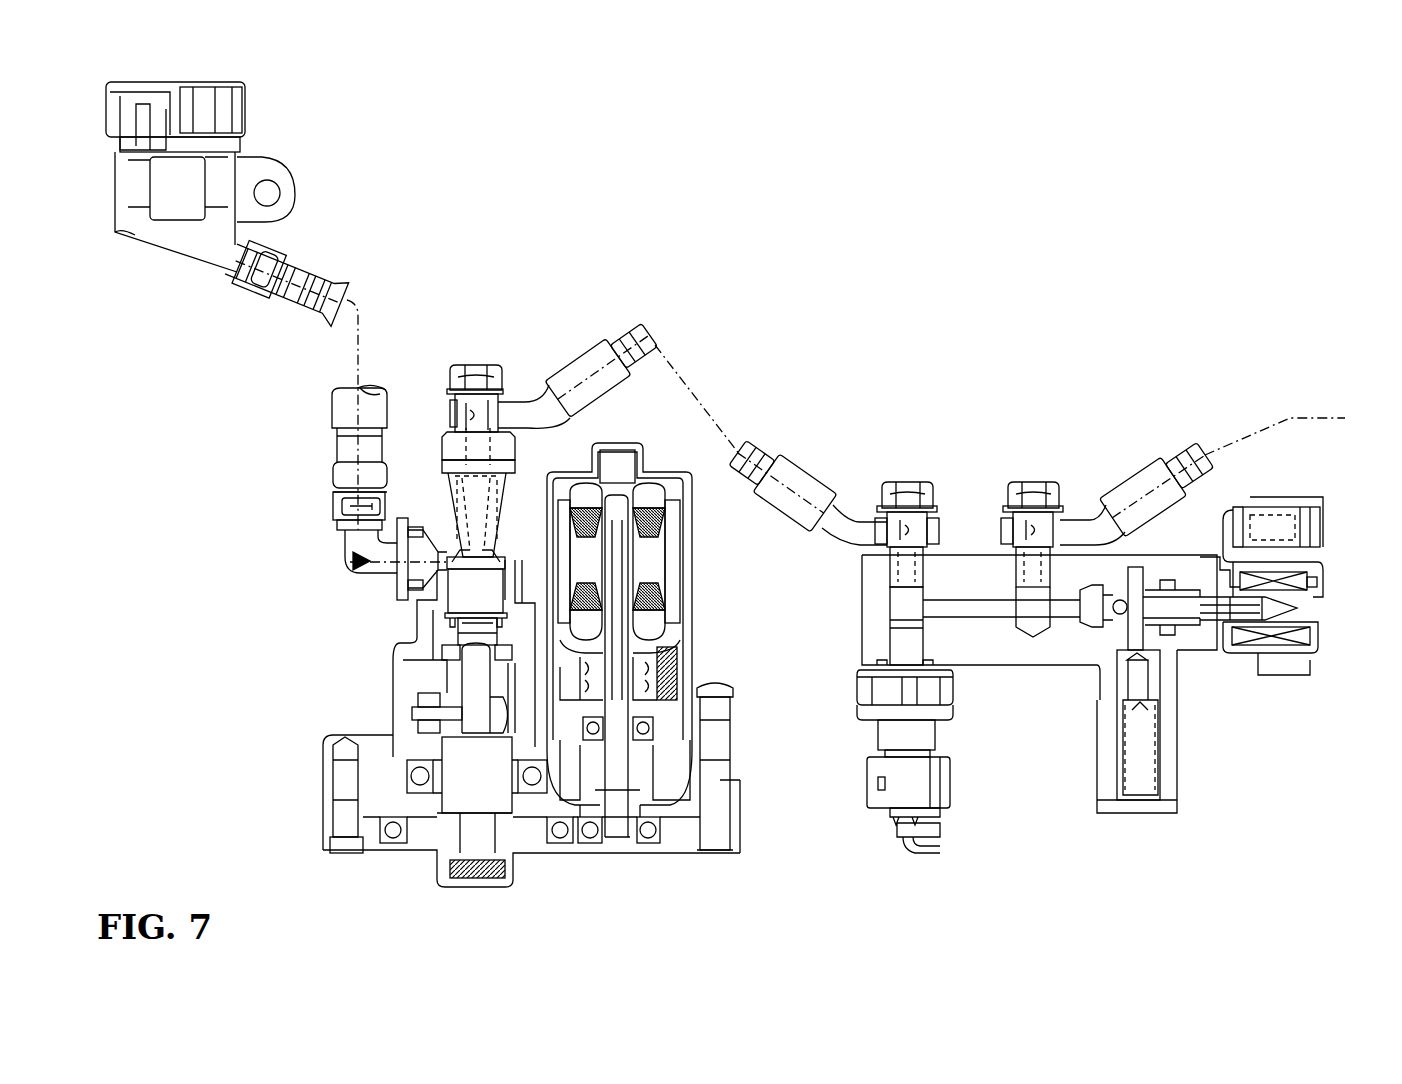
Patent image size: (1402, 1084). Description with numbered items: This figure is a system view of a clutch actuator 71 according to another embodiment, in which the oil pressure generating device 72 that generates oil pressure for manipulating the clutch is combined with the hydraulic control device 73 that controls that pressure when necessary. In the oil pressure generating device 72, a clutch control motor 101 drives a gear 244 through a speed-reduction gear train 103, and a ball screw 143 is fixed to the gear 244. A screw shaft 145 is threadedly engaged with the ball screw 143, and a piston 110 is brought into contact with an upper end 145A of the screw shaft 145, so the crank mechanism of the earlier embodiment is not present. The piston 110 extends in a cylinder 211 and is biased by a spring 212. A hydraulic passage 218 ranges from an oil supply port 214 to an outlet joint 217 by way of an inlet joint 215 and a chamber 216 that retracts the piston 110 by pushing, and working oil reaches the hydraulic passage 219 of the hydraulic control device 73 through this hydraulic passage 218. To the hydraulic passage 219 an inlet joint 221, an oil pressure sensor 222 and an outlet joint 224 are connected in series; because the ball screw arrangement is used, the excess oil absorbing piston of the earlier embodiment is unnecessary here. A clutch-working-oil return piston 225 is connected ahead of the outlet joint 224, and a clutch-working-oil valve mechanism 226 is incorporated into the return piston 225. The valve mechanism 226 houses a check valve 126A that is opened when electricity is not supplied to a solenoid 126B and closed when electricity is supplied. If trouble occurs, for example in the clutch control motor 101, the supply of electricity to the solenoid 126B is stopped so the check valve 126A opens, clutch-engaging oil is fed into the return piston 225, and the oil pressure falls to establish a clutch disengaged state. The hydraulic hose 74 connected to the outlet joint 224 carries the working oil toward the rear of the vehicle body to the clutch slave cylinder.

The clutch actuator 71 is at (837, 232).
The oil pressure generating device 72 is at (213, 489).
The hydraulic control device 73 is at (1107, 349).
The hydraulic hose 74 is at (1290, 410).
The clutch control motor 101 is at (657, 587).
The speed-reduction gear train 103 is at (590, 807).
The piston 110 is at (410, 627).
The check valve 126A is at (1118, 623).
The solenoid 126B is at (1293, 587).
The ball screw 143 is at (463, 760).
The screw shaft 145 is at (463, 720).
The upper end of the screw shaft 145A is at (470, 677).
The cylinder 211 is at (500, 597).
The spring 212 is at (505, 492).
The oil supply port 214 is at (133, 190).
The inlet joint 215 is at (333, 440).
The chamber 216 is at (482, 500).
The outlet joint 217 is at (571, 367).
The hydraulic passage 218 is at (360, 333).
The hydraulic passage 219 is at (722, 405).
The inlet joint 221 is at (800, 482).
The oil pressure sensor 222 is at (873, 783).
The outlet joint 224 is at (1132, 488).
The clutch-working-oil return piston 225 is at (1153, 753).
The clutch-working-oil valve mechanism 226 is at (1243, 617).
The gear 244 is at (528, 807).